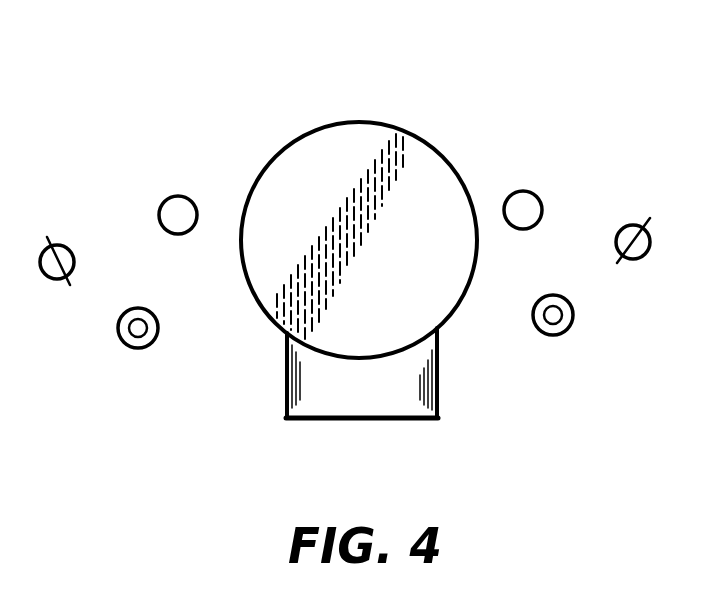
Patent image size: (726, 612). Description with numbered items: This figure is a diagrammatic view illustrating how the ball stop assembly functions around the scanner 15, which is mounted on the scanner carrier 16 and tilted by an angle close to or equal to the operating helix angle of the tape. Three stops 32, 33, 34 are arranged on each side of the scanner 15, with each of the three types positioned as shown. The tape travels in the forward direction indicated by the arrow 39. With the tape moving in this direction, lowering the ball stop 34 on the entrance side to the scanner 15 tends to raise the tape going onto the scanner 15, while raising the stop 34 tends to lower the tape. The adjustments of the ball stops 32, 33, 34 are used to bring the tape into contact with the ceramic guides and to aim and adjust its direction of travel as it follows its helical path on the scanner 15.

The scanner 15 is at (440, 148).
The scanner carrier 16 is at (378, 420).
The ball stop 32 is at (157, 338).
The ball stop 33 is at (177, 196).
The ball stop 34 is at (72, 245).
The arrow 39 is at (362, 100).